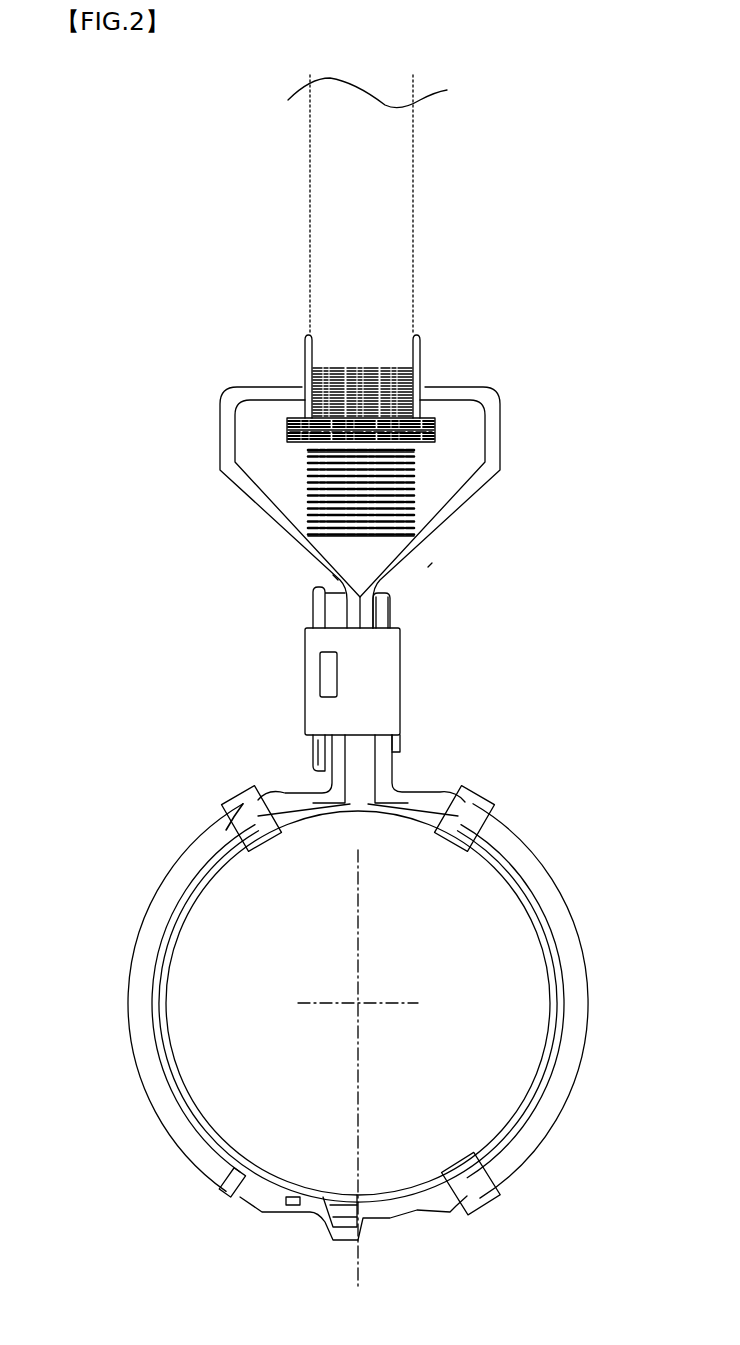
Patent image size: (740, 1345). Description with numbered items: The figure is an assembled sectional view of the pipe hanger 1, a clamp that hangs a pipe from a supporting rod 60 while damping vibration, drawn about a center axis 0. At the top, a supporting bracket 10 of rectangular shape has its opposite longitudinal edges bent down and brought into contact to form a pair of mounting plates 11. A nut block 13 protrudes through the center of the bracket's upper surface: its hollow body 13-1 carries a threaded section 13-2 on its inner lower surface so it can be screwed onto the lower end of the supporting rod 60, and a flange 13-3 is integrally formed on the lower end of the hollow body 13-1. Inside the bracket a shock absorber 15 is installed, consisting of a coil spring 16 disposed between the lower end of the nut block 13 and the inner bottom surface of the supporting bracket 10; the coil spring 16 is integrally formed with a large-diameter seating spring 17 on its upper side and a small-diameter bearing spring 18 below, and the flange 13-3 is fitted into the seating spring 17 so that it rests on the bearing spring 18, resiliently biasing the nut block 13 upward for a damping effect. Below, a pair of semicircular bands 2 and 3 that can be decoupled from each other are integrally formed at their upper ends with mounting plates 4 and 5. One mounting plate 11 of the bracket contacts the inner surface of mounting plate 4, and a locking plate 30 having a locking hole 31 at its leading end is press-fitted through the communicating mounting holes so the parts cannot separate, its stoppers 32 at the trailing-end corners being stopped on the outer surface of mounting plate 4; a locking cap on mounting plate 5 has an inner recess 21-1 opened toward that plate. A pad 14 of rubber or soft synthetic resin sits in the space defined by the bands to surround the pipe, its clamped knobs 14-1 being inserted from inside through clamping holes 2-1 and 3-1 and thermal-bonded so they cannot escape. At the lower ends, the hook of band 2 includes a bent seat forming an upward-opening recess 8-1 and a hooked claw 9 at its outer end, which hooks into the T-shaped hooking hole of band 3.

The exhaust pipe hanger assembly 1 is at (190, 270).
The supporting rod 60 is at (412, 232).
The supporting bracket 10 is at (222, 386).
The mounting plates 11 is at (333, 578).
The nut block 13 is at (600, 308).
The hollow body 13-1 is at (420, 345).
The threaded section 13-2 is at (420, 378).
The flange 13-3 is at (436, 418).
The shock absorber 15 is at (282, 475).
The coil spring 16 is at (600, 480).
The large-diameter seating spring 17 is at (428, 440).
The small-diameter bearing spring 18 is at (412, 507).
The locking plate 30 is at (385, 683).
The locking hole 31 is at (325, 675).
The stoppers 32 is at (408, 613).
The mounting plate 5 is at (323, 597).
The mounting plate 4 is at (396, 593).
The inner recess 21-1 is at (315, 752).
The semicircular band 2 is at (558, 1127).
The clamping holes 2-1 is at (478, 1184).
The pad 14 is at (213, 1058).
The clamped knobs 14-1 is at (243, 805).
The semicircular band 3 is at (187, 1157).
The clamping holes 3-1 is at (230, 826).
The hooked claw 9 is at (290, 1212).
The recess 8-1 is at (363, 1240).
The center axis 0 is at (358, 1085).